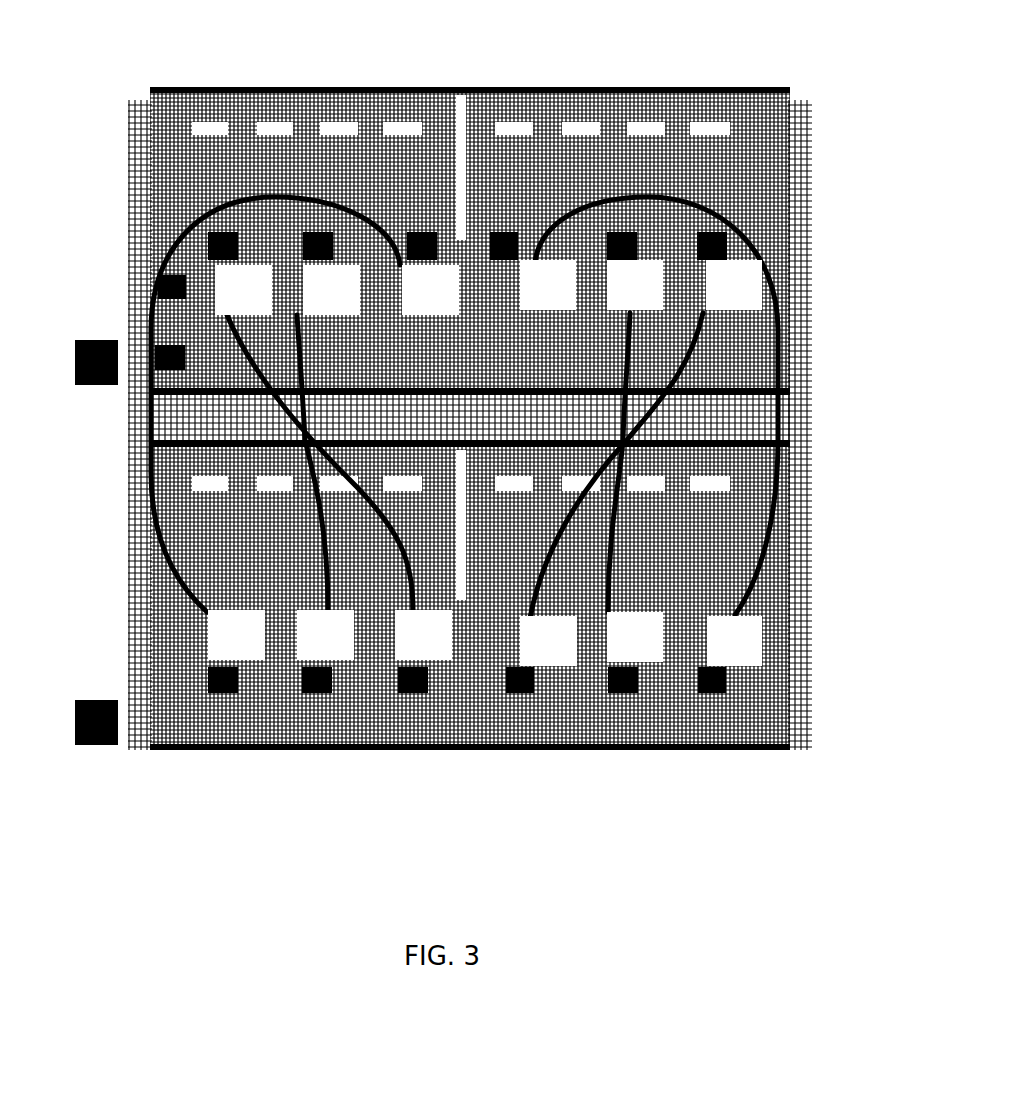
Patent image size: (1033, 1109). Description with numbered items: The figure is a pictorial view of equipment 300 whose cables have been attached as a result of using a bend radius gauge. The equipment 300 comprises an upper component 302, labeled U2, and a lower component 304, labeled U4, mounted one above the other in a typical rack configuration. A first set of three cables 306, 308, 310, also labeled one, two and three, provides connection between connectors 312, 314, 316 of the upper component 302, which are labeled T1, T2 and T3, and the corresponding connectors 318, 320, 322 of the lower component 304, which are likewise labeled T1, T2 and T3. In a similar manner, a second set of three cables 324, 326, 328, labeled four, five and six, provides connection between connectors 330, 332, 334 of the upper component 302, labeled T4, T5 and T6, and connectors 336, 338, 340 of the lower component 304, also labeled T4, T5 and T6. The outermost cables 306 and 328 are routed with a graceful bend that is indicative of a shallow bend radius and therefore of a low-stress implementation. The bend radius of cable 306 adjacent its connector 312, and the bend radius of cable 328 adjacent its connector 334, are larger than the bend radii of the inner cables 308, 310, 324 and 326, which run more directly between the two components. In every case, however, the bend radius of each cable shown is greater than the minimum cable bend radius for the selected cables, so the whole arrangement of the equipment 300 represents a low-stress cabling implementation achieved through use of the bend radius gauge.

The equipment 300 is at (781, 37).
The component 302 is at (56, 225).
The component 304 is at (60, 529).
The cable 306 is at (152, 285).
The cable 308 is at (170, 357).
The cable 310 is at (307, 397).
The connector 312 is at (224, 301).
The connector 314 is at (312, 301).
The connector 316 is at (411, 301).
The connector 318 is at (217, 646).
The connector 320 is at (306, 646).
The connector 322 is at (404, 646).
The cable 324 is at (623, 407).
The cable 326 is at (790, 398).
The cable 328 is at (737, 212).
The connector 330 is at (528, 296).
The connector 332 is at (615, 296).
The connector 334 is at (714, 296).
The connector 336 is at (529, 652).
The connector 338 is at (615, 648).
The connector 340 is at (715, 652).